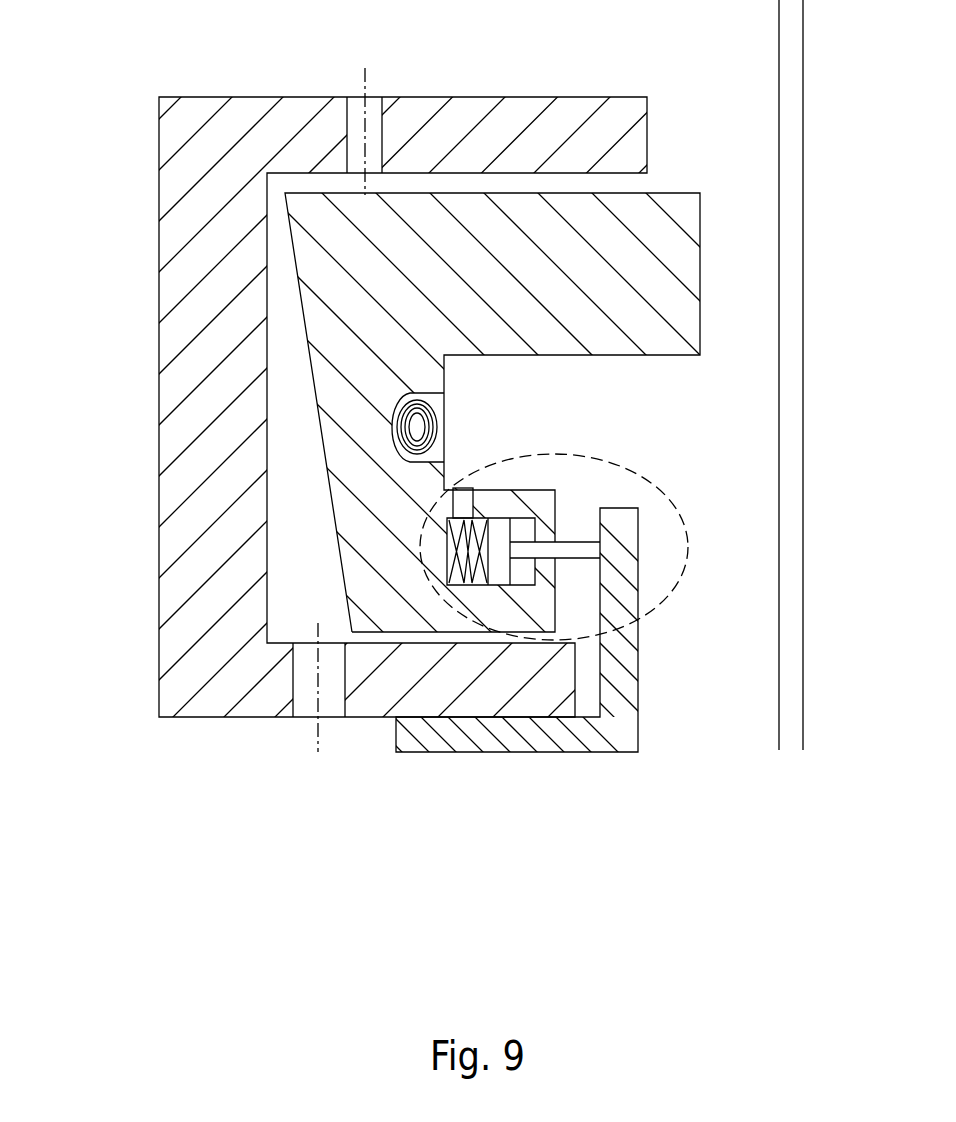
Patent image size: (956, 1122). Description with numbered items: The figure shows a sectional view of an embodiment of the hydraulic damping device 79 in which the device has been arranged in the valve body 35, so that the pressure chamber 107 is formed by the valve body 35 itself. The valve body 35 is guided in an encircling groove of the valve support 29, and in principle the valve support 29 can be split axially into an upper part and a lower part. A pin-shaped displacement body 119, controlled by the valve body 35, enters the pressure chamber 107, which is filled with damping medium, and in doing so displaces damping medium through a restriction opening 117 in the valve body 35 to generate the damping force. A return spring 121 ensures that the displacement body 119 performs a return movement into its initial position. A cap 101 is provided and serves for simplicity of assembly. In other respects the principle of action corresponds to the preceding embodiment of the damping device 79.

The valve support 29 is at (203, 347).
The valve body 35 is at (348, 452).
The restriction opening 117 is at (462, 492).
The pressure chamber 107 is at (466, 490).
The return spring 121 is at (462, 522).
The displacement body 119 is at (522, 560).
The cap 101 is at (592, 738).
The damping device 79 is at (668, 603).